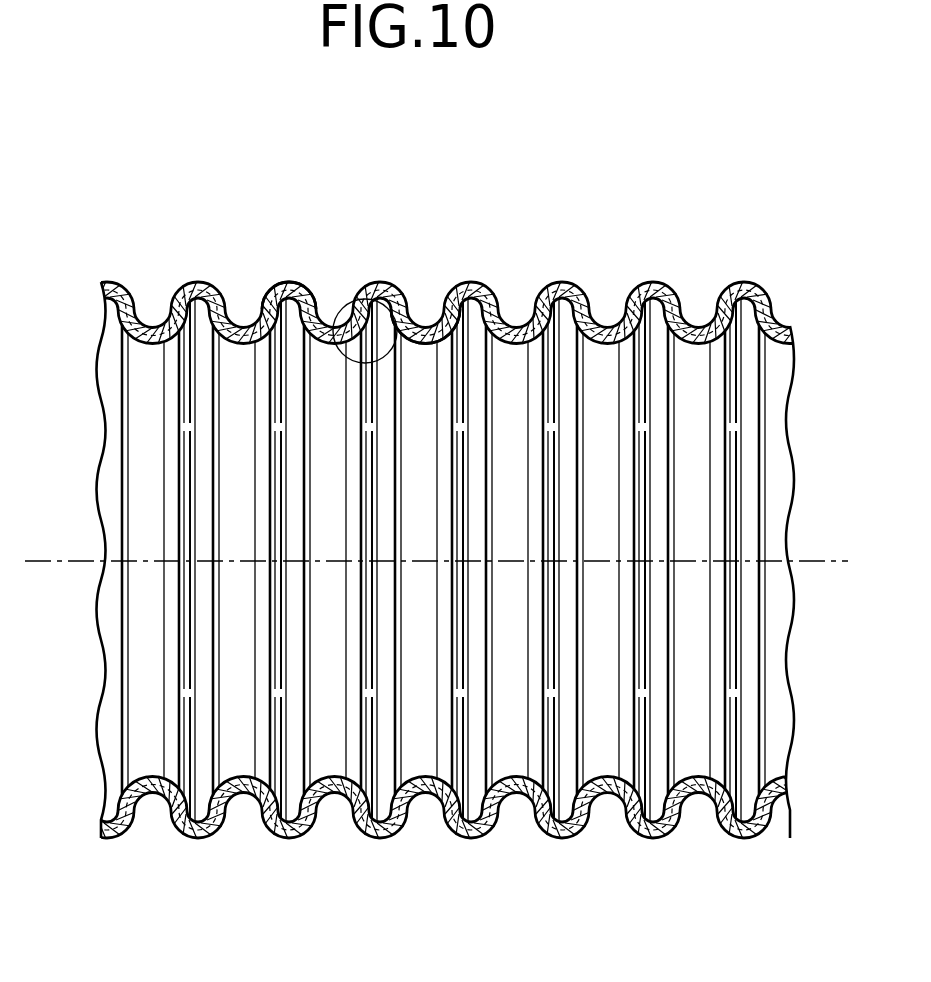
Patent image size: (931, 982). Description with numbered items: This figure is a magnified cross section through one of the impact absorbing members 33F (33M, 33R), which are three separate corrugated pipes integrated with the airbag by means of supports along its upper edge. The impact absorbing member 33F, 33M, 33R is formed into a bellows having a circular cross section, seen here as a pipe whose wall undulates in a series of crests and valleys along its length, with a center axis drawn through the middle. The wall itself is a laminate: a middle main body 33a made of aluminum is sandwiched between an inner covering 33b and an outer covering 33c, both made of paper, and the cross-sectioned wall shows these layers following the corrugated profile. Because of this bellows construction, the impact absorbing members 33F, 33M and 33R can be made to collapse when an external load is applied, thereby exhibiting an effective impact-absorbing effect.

The impact absorbing member 33F is at (530, 280).
The impact absorbing member 33M is at (436, 560).
The impact absorbing member 33R is at (436, 560).
The middle main body 33a is at (323, 318).
The inner covering 33b is at (413, 323).
The outer covering 33c is at (289, 283).